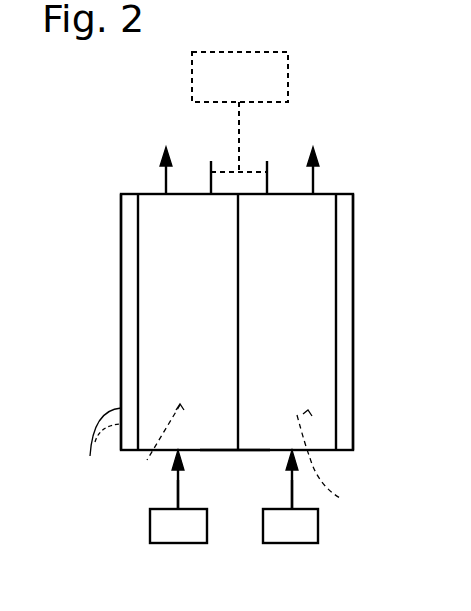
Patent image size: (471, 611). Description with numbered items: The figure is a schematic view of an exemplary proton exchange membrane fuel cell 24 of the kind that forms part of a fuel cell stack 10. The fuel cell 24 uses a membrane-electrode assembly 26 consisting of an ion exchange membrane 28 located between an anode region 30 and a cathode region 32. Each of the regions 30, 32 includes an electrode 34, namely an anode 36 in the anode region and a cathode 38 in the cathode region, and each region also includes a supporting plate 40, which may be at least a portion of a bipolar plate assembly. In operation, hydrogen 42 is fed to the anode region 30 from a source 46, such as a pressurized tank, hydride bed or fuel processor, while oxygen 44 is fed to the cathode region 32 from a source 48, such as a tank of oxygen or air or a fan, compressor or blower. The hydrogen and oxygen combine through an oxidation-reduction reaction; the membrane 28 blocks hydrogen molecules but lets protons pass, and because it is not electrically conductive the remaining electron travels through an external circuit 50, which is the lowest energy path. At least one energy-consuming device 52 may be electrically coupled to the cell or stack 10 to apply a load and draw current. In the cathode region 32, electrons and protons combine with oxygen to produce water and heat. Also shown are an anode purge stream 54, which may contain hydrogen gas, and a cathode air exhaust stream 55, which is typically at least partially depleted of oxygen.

The fuel cell stack 10 is at (131, 92).
The PEM fuel cell 24 is at (136, 455).
The membrane-electrode assembly 26 is at (233, 455).
The ion exchange membrane 28 is at (239, 319).
The anode region 30 is at (121, 298).
The cathode region 32 is at (356, 314).
The electrode 34 is at (180, 405).
The anode 36 is at (158, 446).
The cathode 38 is at (336, 462).
The supporting plate 40 is at (354, 250).
The hydrogen 42 is at (177, 492).
The oxygen 44 is at (290, 505).
The hydrogen source 46 is at (176, 543).
The oxygen source 48 is at (292, 543).
The external circuit 50 is at (232, 172).
The energy-consuming device 52 is at (289, 83).
The anode purge stream 54 is at (164, 178).
The cathode air exhaust stream 55 is at (315, 178).